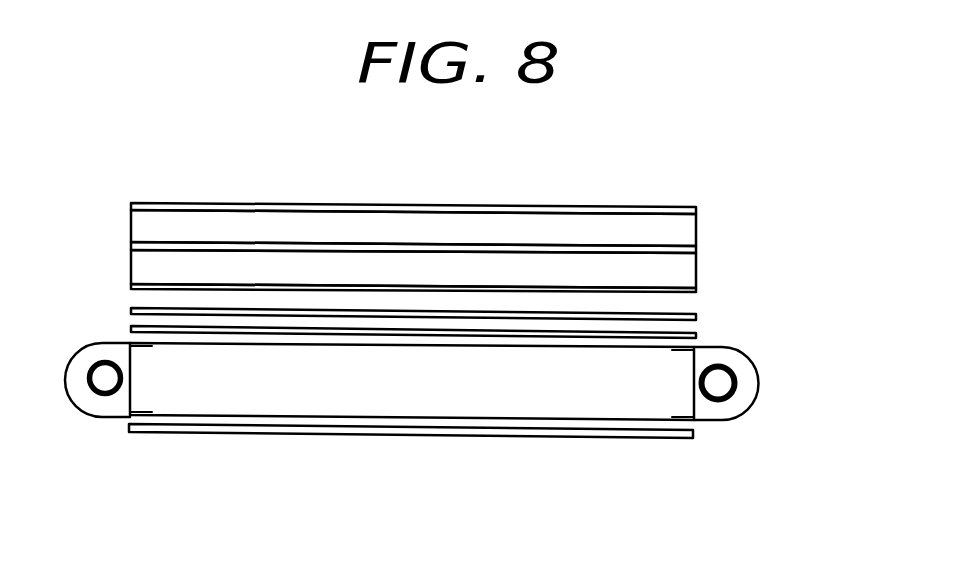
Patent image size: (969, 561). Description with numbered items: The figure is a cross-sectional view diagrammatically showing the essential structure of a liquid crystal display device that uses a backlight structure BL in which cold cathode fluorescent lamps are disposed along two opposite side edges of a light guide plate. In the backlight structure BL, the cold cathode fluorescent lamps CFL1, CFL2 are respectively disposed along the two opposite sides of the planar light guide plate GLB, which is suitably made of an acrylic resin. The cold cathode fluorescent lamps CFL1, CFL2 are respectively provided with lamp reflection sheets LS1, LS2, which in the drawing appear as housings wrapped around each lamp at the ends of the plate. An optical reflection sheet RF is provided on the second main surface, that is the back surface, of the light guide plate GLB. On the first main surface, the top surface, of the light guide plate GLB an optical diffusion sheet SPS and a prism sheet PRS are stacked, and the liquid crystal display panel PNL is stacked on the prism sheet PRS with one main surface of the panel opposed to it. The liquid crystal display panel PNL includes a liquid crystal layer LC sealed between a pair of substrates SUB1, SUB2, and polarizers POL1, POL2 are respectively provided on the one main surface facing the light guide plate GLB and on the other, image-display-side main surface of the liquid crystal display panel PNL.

The liquid crystal display panel PNL is at (470, 207).
The liquid crystal layer LC is at (524, 247).
The polarizer POL2 is at (650, 206).
The polarizer POL1 is at (697, 292).
The substrate SUB2 is at (683, 232).
The substrate SUB1 is at (686, 268).
The prism sheet PRS is at (698, 318).
The optical diffusion sheet SPS is at (698, 338).
The light guide plate GLB is at (556, 402).
The optical reflection sheet RF is at (402, 436).
The lamp reflection sheet LS1 is at (76, 352).
The lamp reflection sheet LS2 is at (758, 395).
The cold cathode fluorescent lamp CFL1 is at (105, 383).
The cold cathode fluorescent lamp CFL2 is at (720, 393).
The backlight structure BL is at (445, 412).